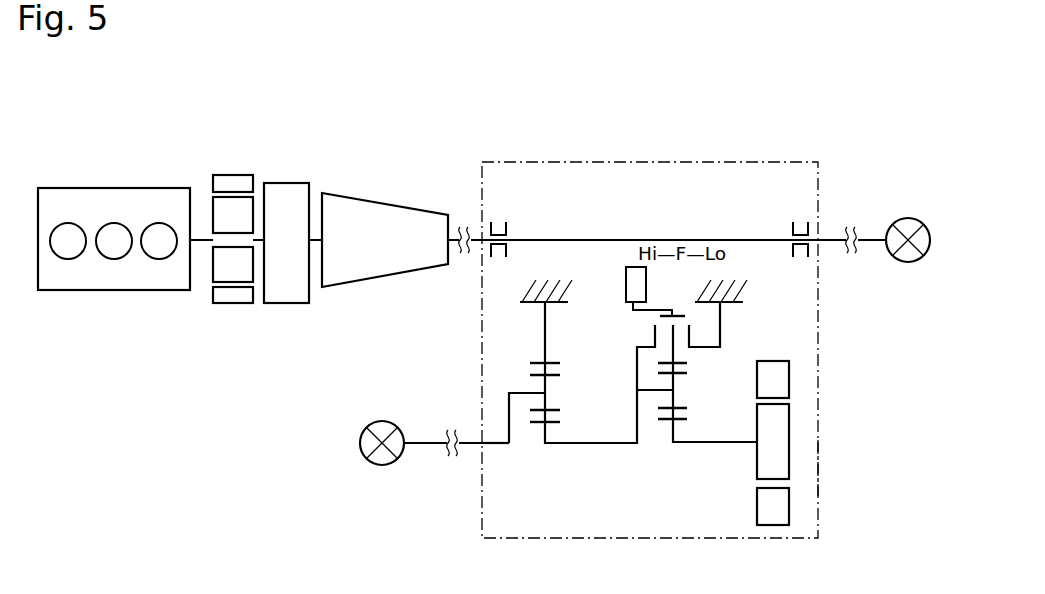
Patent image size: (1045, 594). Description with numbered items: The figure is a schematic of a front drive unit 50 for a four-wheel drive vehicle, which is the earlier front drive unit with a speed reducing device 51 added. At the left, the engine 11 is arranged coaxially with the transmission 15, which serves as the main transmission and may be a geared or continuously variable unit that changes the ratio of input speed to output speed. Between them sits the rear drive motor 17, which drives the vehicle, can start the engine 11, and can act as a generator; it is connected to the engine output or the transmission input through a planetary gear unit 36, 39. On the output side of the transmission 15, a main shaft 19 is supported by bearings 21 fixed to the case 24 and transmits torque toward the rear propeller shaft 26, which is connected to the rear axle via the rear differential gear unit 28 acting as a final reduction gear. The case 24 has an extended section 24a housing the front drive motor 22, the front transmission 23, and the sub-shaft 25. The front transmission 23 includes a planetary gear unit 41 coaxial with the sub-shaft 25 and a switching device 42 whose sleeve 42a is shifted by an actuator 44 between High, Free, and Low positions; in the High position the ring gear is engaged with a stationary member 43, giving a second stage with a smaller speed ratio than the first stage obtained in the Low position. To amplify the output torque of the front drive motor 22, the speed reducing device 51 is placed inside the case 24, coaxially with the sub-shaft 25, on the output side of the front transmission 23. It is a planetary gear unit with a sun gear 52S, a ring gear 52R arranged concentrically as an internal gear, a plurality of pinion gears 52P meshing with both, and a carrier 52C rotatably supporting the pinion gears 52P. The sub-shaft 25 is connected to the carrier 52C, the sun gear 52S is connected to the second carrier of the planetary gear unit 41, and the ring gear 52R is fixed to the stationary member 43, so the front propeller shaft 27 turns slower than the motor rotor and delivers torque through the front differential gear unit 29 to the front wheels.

The engine 11 is at (117, 195).
The rear drive motor 17 is at (238, 185).
The planetary gear unit 36 is at (312, 201).
The hydraulic pump 39 is at (287, 188).
The transmission 15 is at (365, 195).
The main shaft 19 is at (697, 238).
The bearings 21 is at (500, 222).
The case 24 is at (636, 162).
The extended section 24a is at (818, 465).
The front drive unit 50 is at (651, 310).
The stationary member 43 is at (530, 297).
The actuator 44 is at (633, 283).
The switching device 42 is at (645, 319).
The sleeve 42a is at (681, 315).
The speed reducing device 51 is at (602, 442).
The carrier 52C is at (509, 392).
The ring gear 52R is at (555, 353).
The pinion gears 52P is at (547, 386).
The sun gear 52S is at (552, 428).
The front transmission 23 is at (673, 455).
The planetary gear unit 41 is at (698, 453).
The front drive motor 22 is at (788, 432).
The sub-shaft 25 is at (493, 448).
The front propeller shaft 27 is at (463, 452).
The front differential gear unit 29 is at (392, 468).
The rear propeller shaft 26 is at (832, 245).
The rear differential gear unit 28 is at (912, 262).